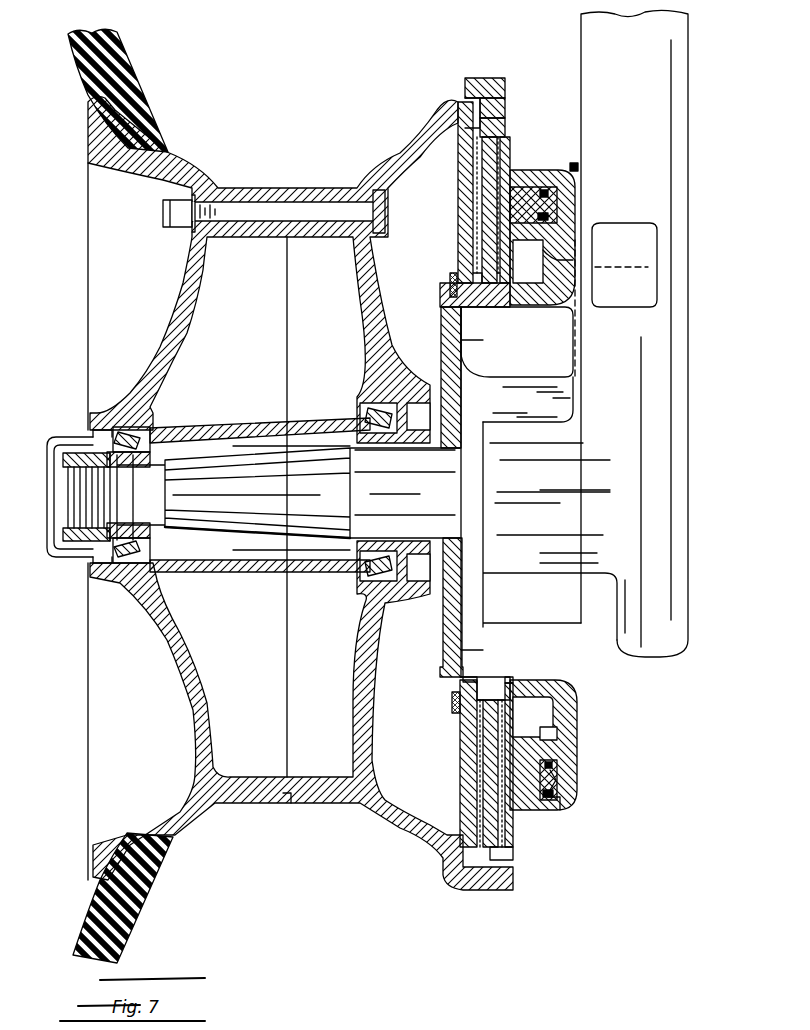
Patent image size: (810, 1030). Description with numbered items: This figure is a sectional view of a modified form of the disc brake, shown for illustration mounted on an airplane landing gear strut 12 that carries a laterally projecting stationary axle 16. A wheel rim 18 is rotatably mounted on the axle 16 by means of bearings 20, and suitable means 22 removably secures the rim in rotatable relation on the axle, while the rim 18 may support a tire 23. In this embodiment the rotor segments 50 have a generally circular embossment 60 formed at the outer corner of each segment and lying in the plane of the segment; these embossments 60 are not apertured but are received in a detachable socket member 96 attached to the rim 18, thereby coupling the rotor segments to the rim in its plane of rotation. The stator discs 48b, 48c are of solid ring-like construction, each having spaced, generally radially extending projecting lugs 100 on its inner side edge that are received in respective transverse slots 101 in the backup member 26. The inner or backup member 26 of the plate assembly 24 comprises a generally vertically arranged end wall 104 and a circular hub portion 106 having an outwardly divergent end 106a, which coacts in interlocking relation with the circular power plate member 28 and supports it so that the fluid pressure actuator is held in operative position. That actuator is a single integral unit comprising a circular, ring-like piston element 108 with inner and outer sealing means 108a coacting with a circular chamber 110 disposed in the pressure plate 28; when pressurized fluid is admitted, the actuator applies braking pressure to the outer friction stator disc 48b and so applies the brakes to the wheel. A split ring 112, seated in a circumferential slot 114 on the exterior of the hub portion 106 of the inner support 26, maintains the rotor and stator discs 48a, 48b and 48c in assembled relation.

The airplane landing gear strut 12 is at (688, 347).
The stationary axle 16 is at (230, 450).
The wheel rim 18 is at (180, 693).
The bearings 20 is at (348, 413).
The securing means 22 is at (70, 552).
The tire 23 is at (118, 47).
The plate assembly 24 is at (577, 167).
The backup member 26 is at (440, 333).
The power plate member 28 is at (567, 217).
The rotor disc 48a is at (493, 150).
The outer friction stator disc 48b is at (510, 157).
The stator disc 48c is at (467, 193).
The rotor segments 50 is at (490, 133).
The embossment 60 is at (487, 110).
The detachable socket member 96 is at (478, 76).
The projecting lugs 100 is at (468, 677).
The transverse slots 101 is at (488, 687).
The end wall 104 is at (470, 333).
The circular hub portion 106 is at (537, 303).
The outwardly divergent end 106a is at (573, 260).
The piston element 108 is at (510, 210).
The sealing means 108a is at (557, 193).
The circular chamber 110 is at (567, 780).
The split ring 112 is at (450, 700).
The circumferential slot 114 is at (453, 293).